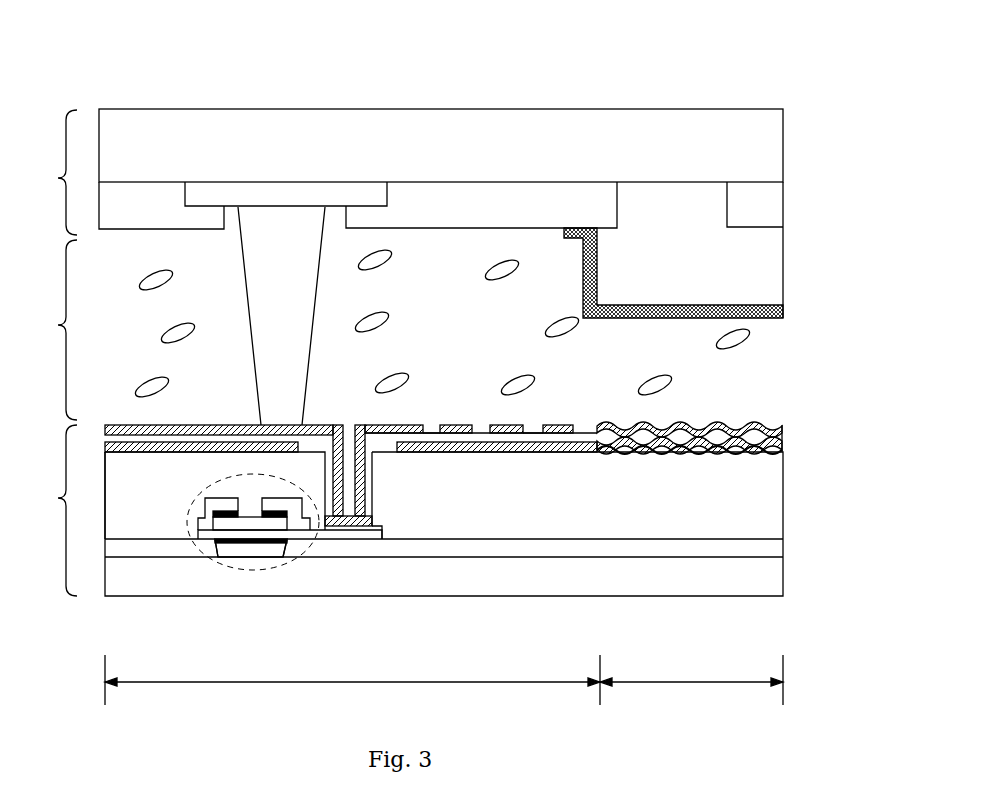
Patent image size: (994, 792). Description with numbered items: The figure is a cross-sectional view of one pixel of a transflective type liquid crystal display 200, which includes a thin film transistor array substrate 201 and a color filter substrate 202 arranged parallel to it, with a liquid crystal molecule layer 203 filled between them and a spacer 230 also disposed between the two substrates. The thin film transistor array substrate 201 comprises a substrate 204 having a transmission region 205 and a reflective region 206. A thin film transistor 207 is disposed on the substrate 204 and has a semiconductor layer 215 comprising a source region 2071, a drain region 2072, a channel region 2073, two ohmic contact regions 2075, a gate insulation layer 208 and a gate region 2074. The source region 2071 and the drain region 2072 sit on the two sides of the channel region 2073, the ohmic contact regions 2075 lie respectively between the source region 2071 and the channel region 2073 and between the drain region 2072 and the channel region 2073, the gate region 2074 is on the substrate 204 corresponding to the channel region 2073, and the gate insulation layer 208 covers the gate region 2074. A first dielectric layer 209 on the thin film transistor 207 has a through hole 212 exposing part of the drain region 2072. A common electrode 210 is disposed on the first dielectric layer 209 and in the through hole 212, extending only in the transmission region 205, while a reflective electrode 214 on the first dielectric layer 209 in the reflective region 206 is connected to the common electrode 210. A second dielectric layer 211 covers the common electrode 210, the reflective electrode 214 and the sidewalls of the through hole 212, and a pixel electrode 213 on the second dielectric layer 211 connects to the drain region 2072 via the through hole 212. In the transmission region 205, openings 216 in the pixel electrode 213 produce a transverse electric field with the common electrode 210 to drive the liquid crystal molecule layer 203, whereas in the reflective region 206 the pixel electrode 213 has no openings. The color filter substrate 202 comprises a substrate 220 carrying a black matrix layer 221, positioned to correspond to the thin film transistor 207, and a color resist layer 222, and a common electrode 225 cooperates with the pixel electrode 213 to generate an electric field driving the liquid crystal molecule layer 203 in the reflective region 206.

The transflective type liquid crystal display 200 is at (91, 33).
The thin film transistor array substrate 201 is at (46, 510).
The color filter substrate 202 is at (46, 172).
The liquid crystal molecule layer 203 is at (46, 330).
The substrate 204 is at (783, 578).
The transmission region 205 is at (444, 681).
The reflective region 206 is at (728, 681).
The thin film transistor 207 is at (183, 524).
The gate insulation layer 208 is at (783, 548).
The first dielectric layer 209 is at (783, 500).
The common electrode 210 is at (117, 458).
The second dielectric layer 211 is at (130, 426).
The through hole 212 is at (348, 425).
The pixel electrode 213 is at (232, 425).
The reflective electrode 214 is at (783, 446).
The semiconductor layer 215 is at (287, 515).
The openings 216 is at (477, 430).
The substrate 220 is at (755, 147).
The black matrix layer 221 is at (286, 197).
The color resist layer 222 is at (755, 199).
The common electrode 225 is at (783, 310).
The spacer 230 is at (330, 273).
The source region 2071 is at (223, 503).
The drain region 2072 is at (267, 503).
The channel region 2073 is at (243, 516).
The gate region 2074 is at (255, 550).
The ohmic contact regions 2075 is at (217, 555).